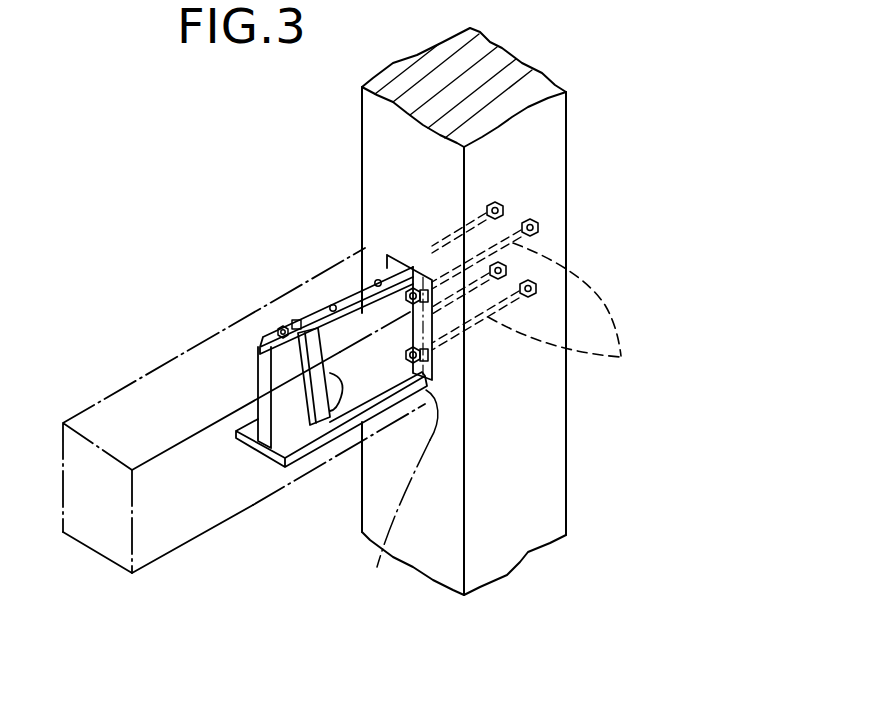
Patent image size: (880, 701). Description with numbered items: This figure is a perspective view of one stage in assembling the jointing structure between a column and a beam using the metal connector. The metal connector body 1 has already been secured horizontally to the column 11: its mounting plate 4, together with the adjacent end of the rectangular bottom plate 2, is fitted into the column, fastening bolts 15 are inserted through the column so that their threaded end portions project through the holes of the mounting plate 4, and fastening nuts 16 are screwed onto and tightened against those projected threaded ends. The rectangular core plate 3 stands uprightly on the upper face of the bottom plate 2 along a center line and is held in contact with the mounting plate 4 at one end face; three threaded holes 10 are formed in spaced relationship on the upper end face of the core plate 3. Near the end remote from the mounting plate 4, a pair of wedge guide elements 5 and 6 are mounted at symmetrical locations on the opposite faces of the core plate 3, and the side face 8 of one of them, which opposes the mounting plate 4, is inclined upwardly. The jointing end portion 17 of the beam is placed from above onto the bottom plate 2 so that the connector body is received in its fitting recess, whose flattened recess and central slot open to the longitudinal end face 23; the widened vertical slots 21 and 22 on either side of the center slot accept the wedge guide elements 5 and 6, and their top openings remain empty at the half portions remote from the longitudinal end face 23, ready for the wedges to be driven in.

The metal connector body 1 is at (250, 379).
The bottom plate 2 is at (363, 424).
The core plate 3 is at (358, 314).
The mounting plate 4 is at (415, 262).
The wedge guide element 5 is at (297, 322).
The wedge guide element 6 is at (318, 398).
The side face 8 is at (327, 405).
The threaded holes 10 is at (322, 302).
The column 11 is at (533, 136).
The fastening bolts 15 is at (579, 321).
The fastening nuts 16 is at (430, 300).
The jointing end portion 17 is at (110, 418).
The widened vertical slot 21 is at (272, 336).
The widened vertical slot 22 is at (290, 330).
The longitudinal end face 23 is at (392, 498).